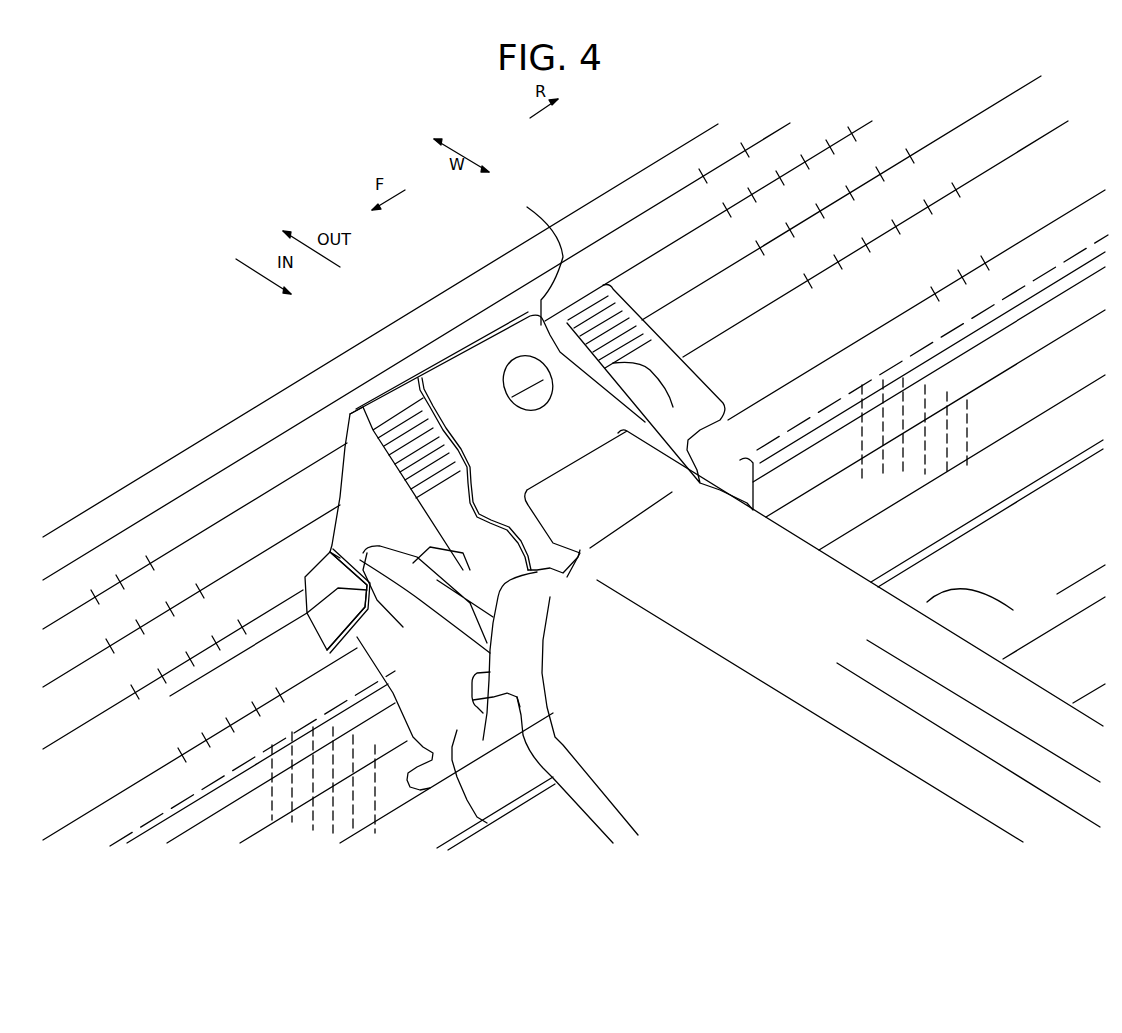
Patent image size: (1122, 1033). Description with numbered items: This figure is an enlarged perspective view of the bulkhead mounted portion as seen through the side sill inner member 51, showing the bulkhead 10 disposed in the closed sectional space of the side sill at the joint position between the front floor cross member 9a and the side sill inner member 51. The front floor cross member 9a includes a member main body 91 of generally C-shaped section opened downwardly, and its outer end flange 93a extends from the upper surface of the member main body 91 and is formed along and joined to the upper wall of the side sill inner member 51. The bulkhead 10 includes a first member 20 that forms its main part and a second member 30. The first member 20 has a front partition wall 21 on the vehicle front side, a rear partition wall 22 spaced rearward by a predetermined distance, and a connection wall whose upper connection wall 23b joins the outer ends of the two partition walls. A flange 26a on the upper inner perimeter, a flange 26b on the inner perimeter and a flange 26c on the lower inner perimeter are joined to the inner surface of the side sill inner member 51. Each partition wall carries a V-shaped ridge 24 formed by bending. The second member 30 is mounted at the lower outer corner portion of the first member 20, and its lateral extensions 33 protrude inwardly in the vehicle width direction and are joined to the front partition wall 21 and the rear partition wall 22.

The bulkhead 10 is at (478, 518).
The first member 20 is at (337, 470).
The front partition wall 21 is at (482, 819).
The rear partition wall 22 is at (497, 306).
The upper connection wall 23b is at (423, 378).
The V-shaped ridge 24 is at (423, 595).
The flange 26a is at (397, 475).
The flange 26b is at (493, 733).
The flange 26c is at (423, 787).
The second member 30 is at (315, 568).
The lateral extension 33 is at (342, 557).
The side sill inner member 51 is at (145, 548).
The end flange 93a is at (627, 477).
The front floor cross member 9a is at (927, 602).
The member main body 91 is at (1027, 697).